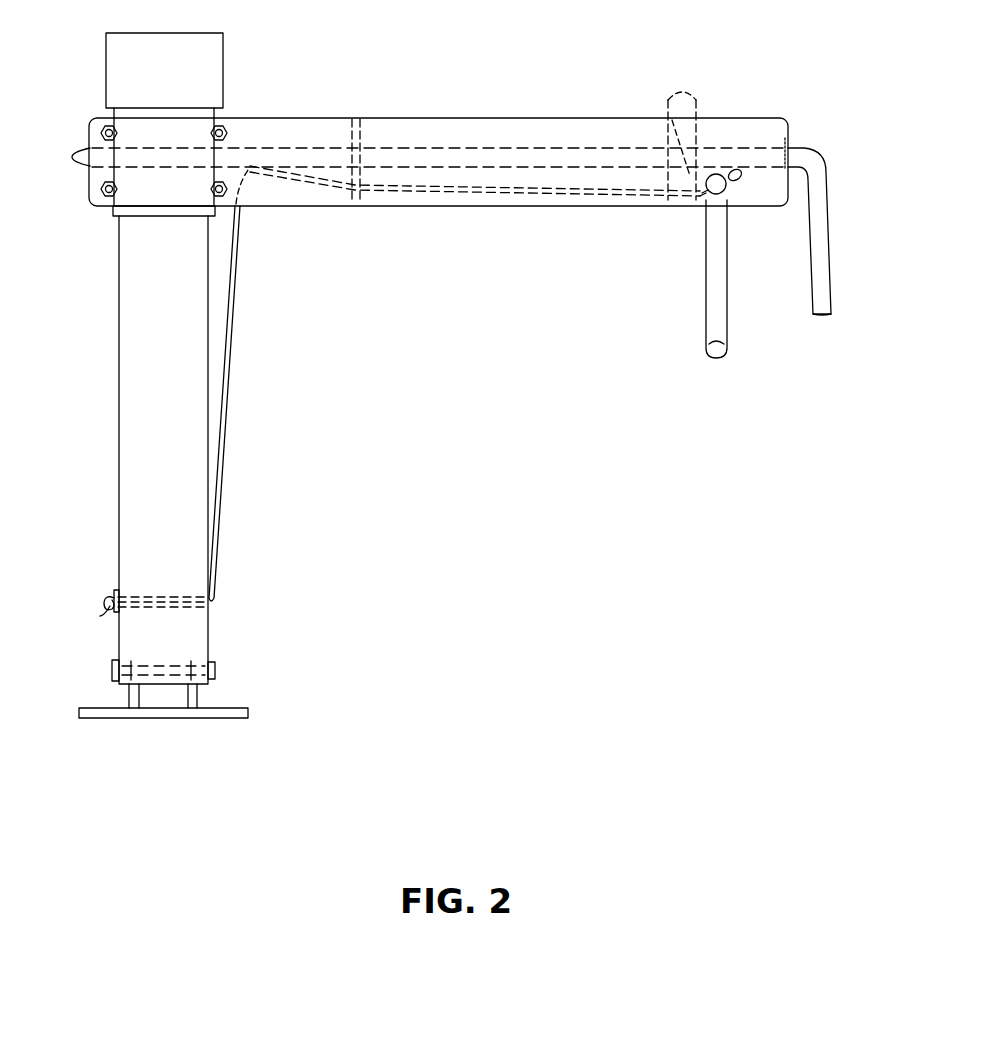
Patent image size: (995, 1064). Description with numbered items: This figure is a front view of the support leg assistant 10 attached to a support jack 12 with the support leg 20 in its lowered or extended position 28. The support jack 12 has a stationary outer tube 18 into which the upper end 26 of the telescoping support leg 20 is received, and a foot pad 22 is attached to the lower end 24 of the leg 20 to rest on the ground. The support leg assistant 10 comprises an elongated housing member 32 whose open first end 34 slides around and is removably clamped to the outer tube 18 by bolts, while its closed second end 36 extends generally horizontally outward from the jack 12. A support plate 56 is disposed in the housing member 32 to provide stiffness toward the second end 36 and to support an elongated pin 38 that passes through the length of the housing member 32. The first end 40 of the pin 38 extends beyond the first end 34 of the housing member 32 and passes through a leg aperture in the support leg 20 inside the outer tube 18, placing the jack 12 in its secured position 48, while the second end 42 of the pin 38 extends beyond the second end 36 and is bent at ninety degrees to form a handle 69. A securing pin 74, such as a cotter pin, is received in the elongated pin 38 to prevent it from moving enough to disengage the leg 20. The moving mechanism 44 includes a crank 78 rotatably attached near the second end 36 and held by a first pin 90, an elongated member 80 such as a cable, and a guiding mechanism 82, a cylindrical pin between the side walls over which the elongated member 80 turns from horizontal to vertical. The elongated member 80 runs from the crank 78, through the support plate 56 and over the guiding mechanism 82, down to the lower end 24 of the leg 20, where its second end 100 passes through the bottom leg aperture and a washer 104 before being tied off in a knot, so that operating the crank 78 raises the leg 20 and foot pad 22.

The support leg assistant 10 is at (616, 62).
The support jack 12 is at (226, 64).
The outer tube 18 is at (113, 212).
The support leg 20 is at (120, 476).
The foot pad 22 is at (238, 712).
The lower end 24 is at (228, 674).
The upper end 26 is at (116, 238).
The extended position 28 is at (285, 484).
The housing member 32 is at (470, 126).
The first end 34 is at (87, 116).
The second end 36 is at (786, 116).
The elongated pin 38 is at (513, 148).
The first end 40 is at (78, 132).
The second end 42 is at (800, 136).
The moving mechanism 44 is at (704, 214).
The secured position 48 is at (234, 108).
The support plate 56 is at (360, 130).
The handle 69 is at (826, 258).
The securing pin 74 is at (692, 102).
The crank 78 is at (716, 288).
The elongated member 80 is at (234, 390).
The guiding mechanism 82 is at (258, 176).
The first pin 90 is at (738, 196).
The second end 100 is at (106, 598).
The washer 104 is at (104, 616).